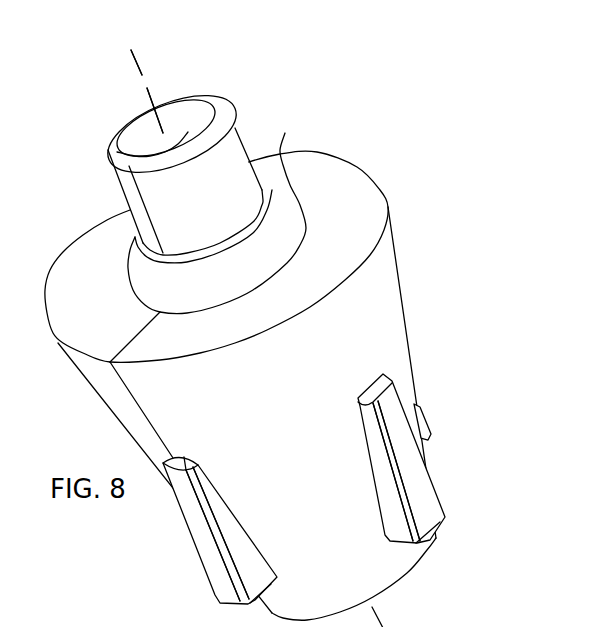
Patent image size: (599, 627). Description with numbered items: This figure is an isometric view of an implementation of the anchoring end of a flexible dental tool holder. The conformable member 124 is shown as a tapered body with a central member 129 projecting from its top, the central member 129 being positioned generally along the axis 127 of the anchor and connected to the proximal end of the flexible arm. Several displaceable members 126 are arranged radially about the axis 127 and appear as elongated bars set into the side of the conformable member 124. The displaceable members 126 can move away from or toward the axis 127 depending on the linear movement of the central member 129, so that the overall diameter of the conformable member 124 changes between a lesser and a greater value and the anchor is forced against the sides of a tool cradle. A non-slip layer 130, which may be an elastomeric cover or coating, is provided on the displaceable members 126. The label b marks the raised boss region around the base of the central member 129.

The conformable member 124 is at (400, 196).
The displaceable member 126 is at (185, 525).
The axis 127 is at (134, 58).
The central member 129 is at (127, 181).
The non-slip layer 130 is at (217, 578).
The boss b is at (277, 210).